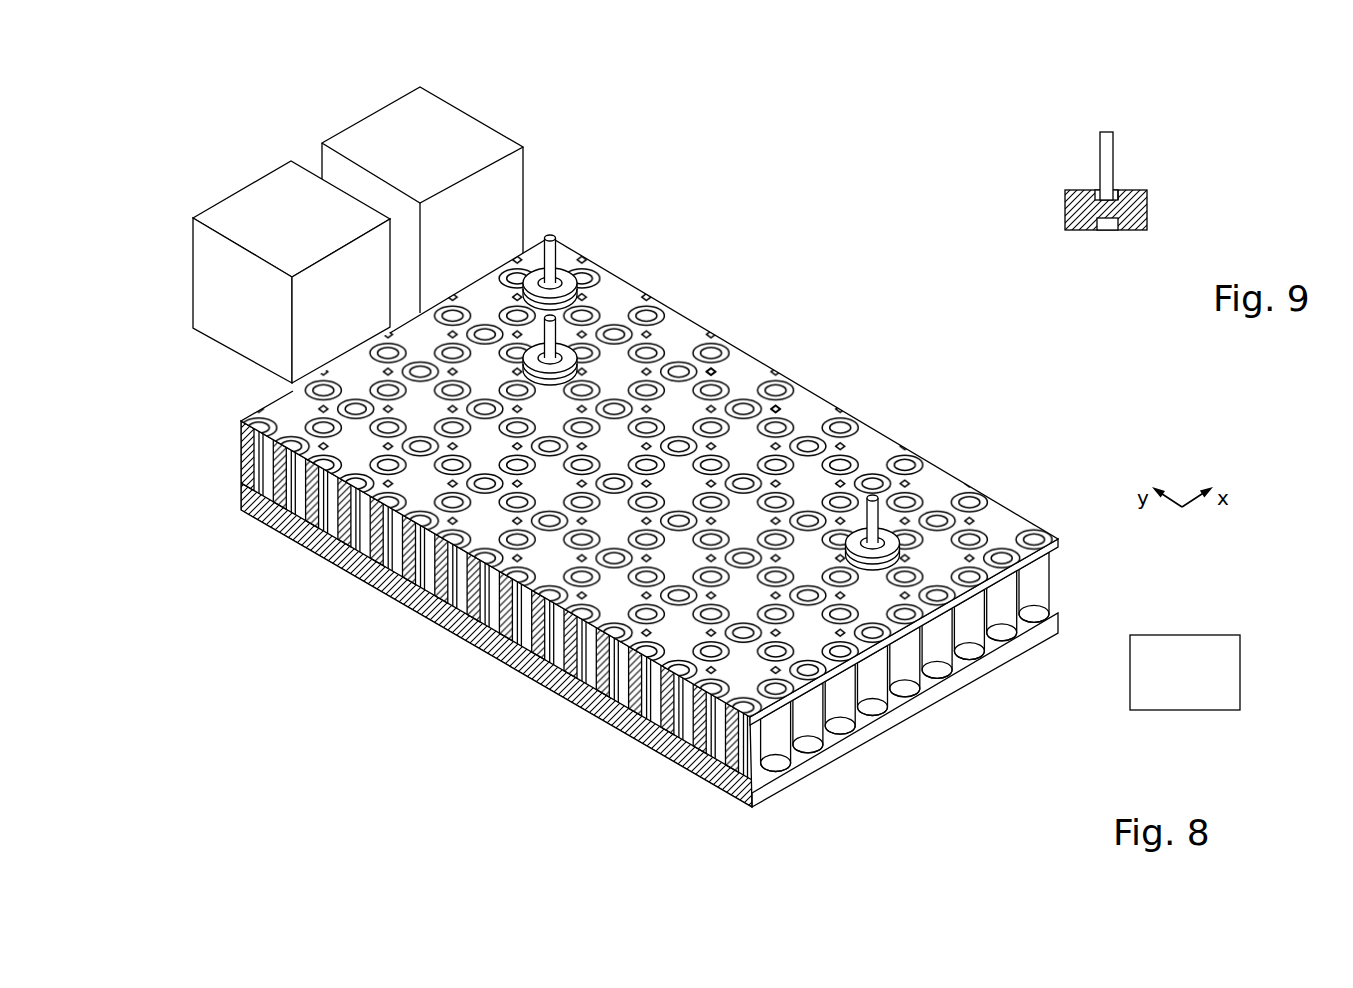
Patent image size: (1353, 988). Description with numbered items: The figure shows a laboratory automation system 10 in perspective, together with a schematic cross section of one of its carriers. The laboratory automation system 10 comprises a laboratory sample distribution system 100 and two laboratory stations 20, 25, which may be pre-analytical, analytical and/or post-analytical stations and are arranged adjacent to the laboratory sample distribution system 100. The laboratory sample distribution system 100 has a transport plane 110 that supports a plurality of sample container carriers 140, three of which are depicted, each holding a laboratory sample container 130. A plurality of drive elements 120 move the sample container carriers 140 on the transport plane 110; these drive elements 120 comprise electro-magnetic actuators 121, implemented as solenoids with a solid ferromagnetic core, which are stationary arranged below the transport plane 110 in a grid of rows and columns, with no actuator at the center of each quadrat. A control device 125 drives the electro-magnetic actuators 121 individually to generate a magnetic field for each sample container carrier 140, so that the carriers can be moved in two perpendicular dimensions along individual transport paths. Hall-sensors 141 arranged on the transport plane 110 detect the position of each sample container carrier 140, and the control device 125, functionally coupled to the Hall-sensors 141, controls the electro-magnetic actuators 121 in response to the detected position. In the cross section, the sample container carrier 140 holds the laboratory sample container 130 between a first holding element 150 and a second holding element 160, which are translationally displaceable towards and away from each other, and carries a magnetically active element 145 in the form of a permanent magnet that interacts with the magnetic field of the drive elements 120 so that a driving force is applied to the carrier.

In FIG. 8, the laboratory automation system 10 is at (459, 757).
In FIG. 8, the laboratory station 20 is at (248, 207).
In FIG. 8, the laboratory station 25 is at (378, 130).
In FIG. 8, the laboratory sample distribution system 100 is at (390, 690).
In FIG. 8, the transport plane 110 is at (313, 410).
In FIG. 8, the drive element 120 is at (733, 752).
In FIG. 8, the electro-magnetic actuator 121 is at (730, 738).
In FIG. 8, the control device 125 is at (1208, 681).
In FIG. 8, the laboratory sample container 130 is at (903, 523).
In FIG. 9, the laboratory sample container 130 is at (1107, 143).
In FIG. 8, the sample container carrier 140 is at (573, 373).
In FIG. 9, the sample container carrier 140 is at (1147, 198).
In FIG. 8, the Hall-sensor 141 is at (775, 410).
In FIG. 9, the magnetically active element 145 is at (1108, 226).
In FIG. 9, the first holding element 150 is at (1097, 183).
In FIG. 9, the second holding element 160 is at (1115, 183).